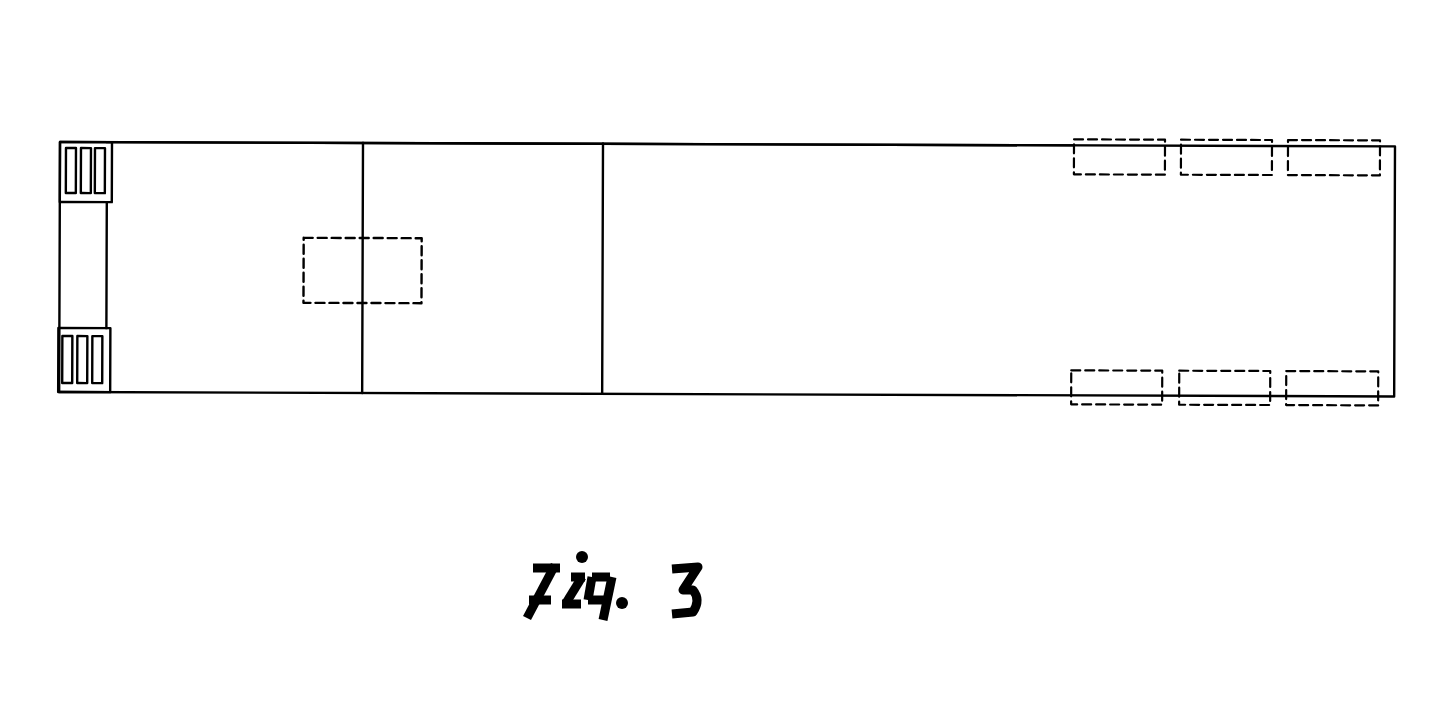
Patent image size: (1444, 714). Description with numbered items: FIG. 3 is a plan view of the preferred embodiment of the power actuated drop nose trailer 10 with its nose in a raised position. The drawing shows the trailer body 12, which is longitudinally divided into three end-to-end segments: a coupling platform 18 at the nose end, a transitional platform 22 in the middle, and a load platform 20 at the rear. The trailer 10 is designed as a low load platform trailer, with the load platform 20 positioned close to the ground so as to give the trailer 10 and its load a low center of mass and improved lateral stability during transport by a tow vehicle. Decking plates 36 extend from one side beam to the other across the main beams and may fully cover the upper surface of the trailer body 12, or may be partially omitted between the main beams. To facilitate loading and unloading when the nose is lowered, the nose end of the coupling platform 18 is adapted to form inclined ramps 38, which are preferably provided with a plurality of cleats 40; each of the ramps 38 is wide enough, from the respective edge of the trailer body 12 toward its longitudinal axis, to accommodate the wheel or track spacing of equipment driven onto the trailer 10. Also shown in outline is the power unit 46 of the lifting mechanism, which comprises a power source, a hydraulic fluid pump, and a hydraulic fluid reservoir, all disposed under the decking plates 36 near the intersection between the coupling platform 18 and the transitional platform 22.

The power actuated drop nose trailer 10 is at (1019, 120).
The trailer body 12 is at (750, 419).
The coupling platform 18 is at (232, 355).
The load platform 20 is at (940, 355).
The transitional platform 22 is at (469, 191).
The decking plates 36 is at (248, 195).
The inclined ramps 38 is at (78, 142).
The cleats 40 is at (95, 382).
The power unit 46 is at (388, 288).